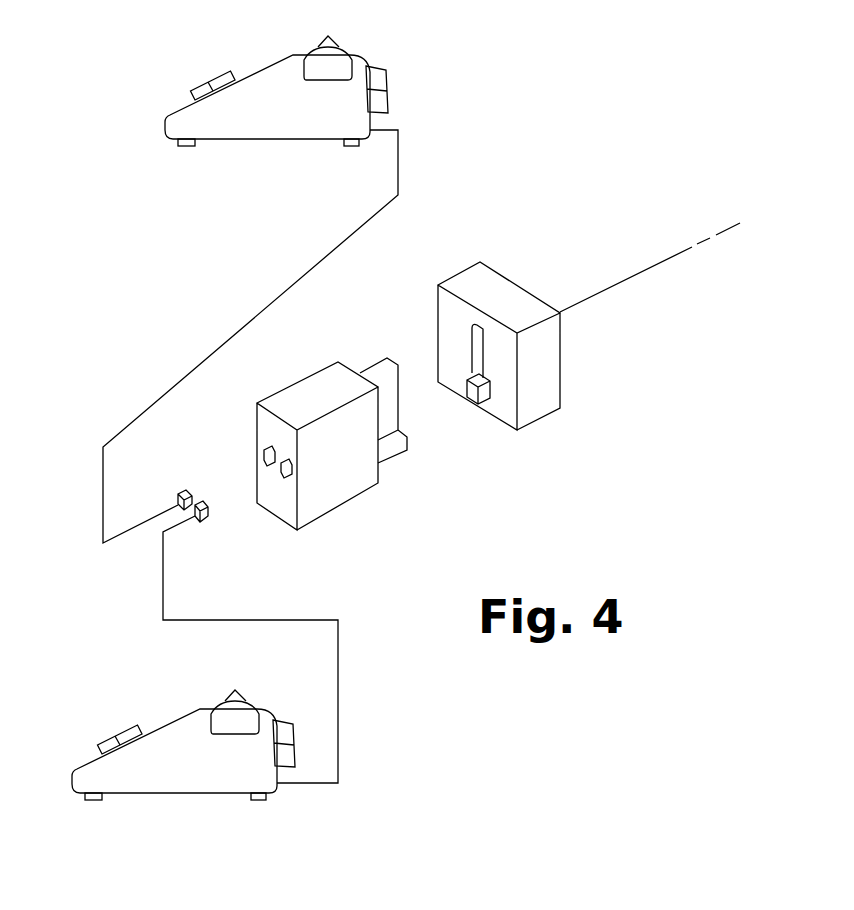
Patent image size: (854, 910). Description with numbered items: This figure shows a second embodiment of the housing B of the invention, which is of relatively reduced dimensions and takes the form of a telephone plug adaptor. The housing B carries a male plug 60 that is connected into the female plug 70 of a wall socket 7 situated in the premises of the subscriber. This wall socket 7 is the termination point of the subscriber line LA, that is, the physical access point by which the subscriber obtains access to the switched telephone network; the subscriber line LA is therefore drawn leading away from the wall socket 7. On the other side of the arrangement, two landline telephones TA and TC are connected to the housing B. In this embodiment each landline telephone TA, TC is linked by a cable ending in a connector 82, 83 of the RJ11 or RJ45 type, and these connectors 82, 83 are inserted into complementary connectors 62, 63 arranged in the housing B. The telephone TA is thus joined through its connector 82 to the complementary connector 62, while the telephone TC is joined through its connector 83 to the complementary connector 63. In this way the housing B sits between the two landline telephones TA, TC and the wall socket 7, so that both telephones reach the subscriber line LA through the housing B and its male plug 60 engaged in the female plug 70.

The landline telephone TA is at (182, 112).
The landline telephone TC is at (90, 765).
The housing B is at (308, 390).
The male plug 60 is at (388, 412).
The complementary connector 62 is at (263, 456).
The complementary connector 63 is at (285, 476).
The wall socket 7 is at (499, 284).
The female plug 70 is at (470, 407).
The subscriber line LA is at (617, 286).
The connector 82 is at (173, 502).
The connector 83 is at (208, 518).